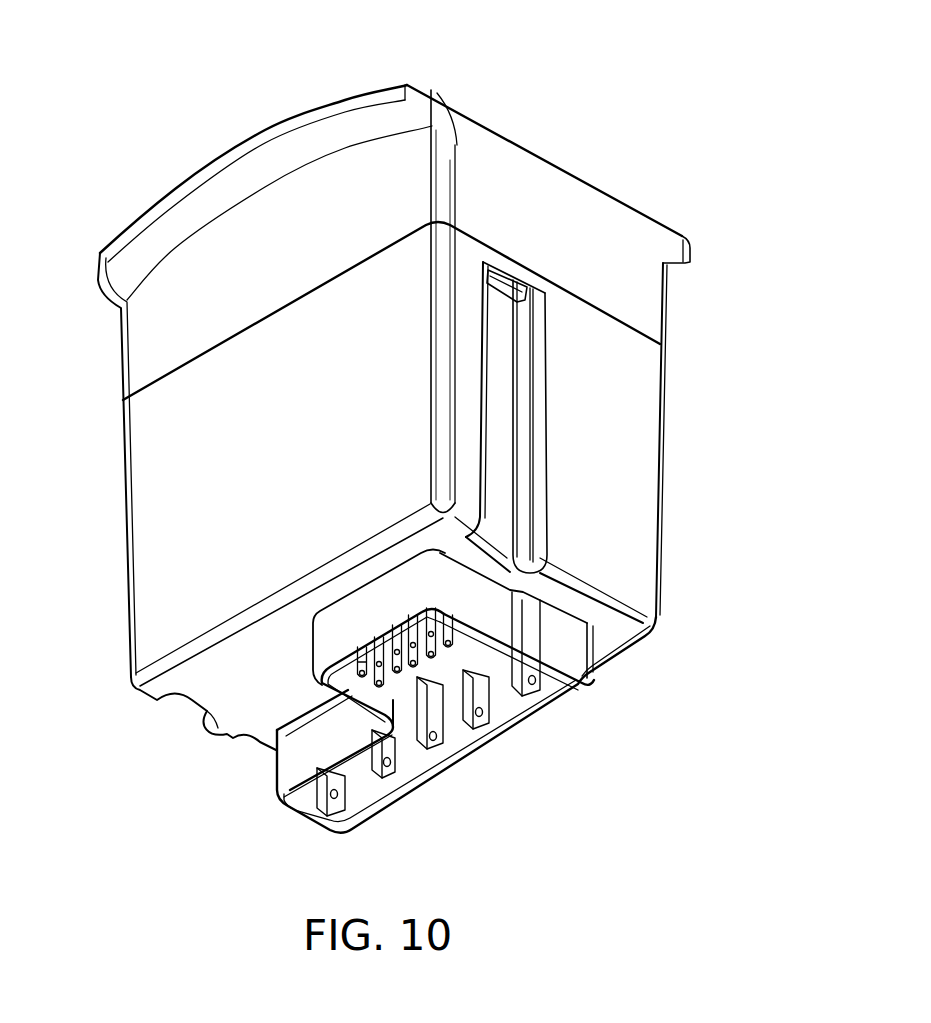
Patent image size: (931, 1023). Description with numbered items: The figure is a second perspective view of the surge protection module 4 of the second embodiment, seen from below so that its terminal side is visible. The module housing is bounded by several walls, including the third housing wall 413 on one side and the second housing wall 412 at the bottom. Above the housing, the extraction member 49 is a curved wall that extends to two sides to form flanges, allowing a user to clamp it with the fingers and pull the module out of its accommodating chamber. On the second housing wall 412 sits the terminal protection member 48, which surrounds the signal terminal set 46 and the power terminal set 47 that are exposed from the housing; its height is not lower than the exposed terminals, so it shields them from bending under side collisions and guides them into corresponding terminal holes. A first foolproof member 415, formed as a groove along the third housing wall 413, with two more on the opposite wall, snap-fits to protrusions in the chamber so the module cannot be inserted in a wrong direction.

The surge protection module 4 is at (692, 54).
The extraction member 49 is at (170, 198).
The third housing wall 413 is at (607, 480).
The first foolproof member 415 is at (510, 417).
The second housing wall 412 is at (610, 636).
The terminal protection member 48 is at (368, 608).
The signal terminal set 46 is at (380, 662).
The power terminal set 47 is at (431, 752).